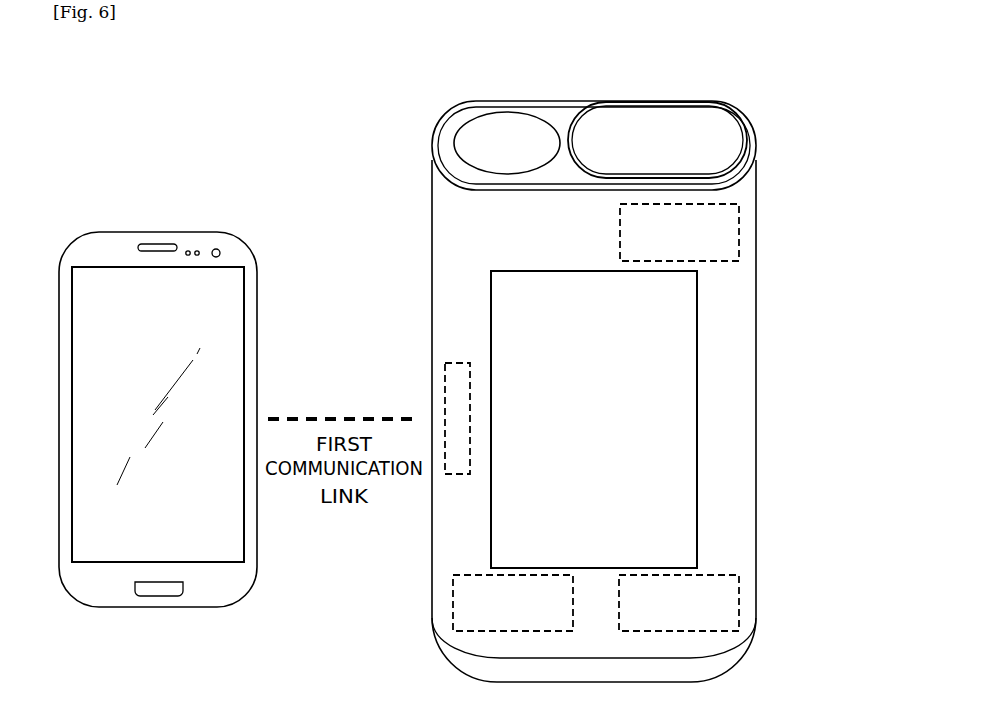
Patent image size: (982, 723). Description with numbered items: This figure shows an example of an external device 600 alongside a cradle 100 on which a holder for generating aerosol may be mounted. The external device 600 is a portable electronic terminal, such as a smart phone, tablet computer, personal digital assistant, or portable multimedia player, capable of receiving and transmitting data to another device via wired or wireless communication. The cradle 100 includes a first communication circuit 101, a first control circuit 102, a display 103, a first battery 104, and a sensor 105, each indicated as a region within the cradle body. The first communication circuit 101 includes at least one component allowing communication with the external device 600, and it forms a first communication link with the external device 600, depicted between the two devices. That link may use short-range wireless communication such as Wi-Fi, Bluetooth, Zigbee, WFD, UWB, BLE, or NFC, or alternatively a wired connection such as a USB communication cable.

The external device 600 is at (158, 232).
The cradle 100 is at (613, 87).
The first communication circuit 101 is at (445, 377).
The first control circuit 102 is at (739, 232).
The display 103 is at (697, 419).
The first battery 104 is at (739, 603).
The sensor 105 is at (453, 602).